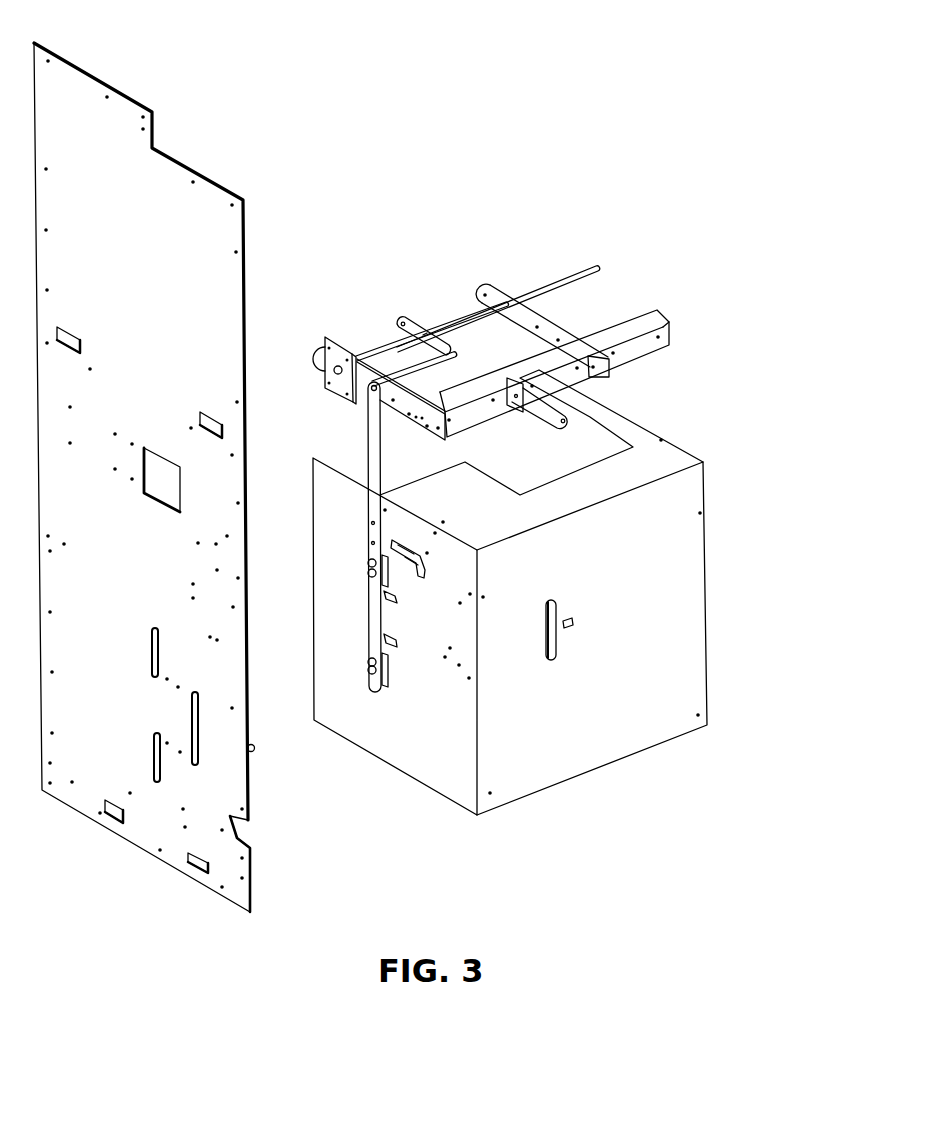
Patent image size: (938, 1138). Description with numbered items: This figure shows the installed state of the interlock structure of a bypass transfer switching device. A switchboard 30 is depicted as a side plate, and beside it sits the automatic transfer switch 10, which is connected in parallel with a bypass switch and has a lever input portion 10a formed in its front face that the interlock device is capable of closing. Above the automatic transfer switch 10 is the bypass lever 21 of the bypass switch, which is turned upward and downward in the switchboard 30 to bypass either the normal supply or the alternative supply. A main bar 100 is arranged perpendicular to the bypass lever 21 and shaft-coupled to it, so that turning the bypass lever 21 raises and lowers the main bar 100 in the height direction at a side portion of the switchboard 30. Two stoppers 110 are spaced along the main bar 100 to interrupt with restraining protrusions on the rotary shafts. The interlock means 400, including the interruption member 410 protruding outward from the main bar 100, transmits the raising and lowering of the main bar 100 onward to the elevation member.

The switchboard 30 is at (87, 88).
The bypass lever 21 is at (470, 367).
The main bar 100 is at (370, 422).
The interlock means 400 is at (618, 520).
The interruption member 410 is at (390, 533).
The automatic transfer switch 10 is at (697, 627).
The lever input portion 10a is at (556, 637).
The stoppers 110 is at (387, 573).